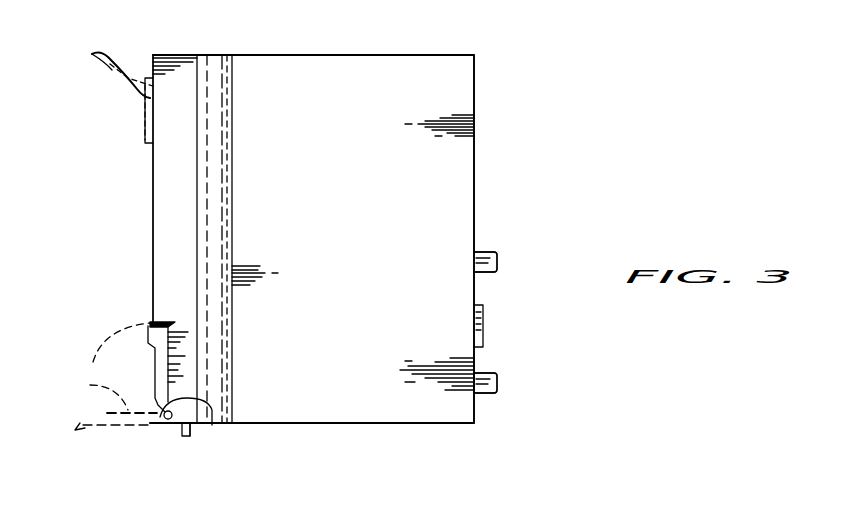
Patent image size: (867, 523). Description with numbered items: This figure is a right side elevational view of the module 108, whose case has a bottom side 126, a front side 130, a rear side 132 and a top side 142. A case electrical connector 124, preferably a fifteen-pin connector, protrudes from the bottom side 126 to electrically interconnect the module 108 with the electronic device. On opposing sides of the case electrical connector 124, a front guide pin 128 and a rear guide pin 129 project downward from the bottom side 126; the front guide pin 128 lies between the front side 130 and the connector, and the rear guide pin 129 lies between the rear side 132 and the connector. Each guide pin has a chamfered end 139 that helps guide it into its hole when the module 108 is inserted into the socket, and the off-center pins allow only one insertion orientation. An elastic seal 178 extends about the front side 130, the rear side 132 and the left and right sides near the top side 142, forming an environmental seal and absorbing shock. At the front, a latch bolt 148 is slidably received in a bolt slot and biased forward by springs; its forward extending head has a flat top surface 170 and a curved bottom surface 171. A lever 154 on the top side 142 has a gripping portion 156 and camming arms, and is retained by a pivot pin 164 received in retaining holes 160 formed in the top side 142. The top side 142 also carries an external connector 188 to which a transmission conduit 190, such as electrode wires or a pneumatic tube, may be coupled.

The module 108 is at (528, 120).
The rear side 132 is at (420, 55).
The bottom side 126 is at (474, 210).
The front side 130 is at (406, 424).
The top side 142 is at (153, 215).
The elastic seal 178 is at (217, 54).
The external connector 188 is at (143, 127).
The transmission conduit 190 is at (118, 87).
The chamfered end 139 is at (497, 258).
The rear guide pin 129 is at (483, 272).
The front guide pin 128 is at (480, 395).
The case electrical connector 124 is at (483, 335).
The pivot pin 164 is at (152, 428).
The retaining hole 160 is at (200, 428).
The latch bolt 148 is at (188, 438).
The flat top surface 170 is at (183, 430).
The curved bottom surface 171 is at (195, 430).
The lever 154 is at (73, 426).
The gripping portion 156 is at (76, 430).